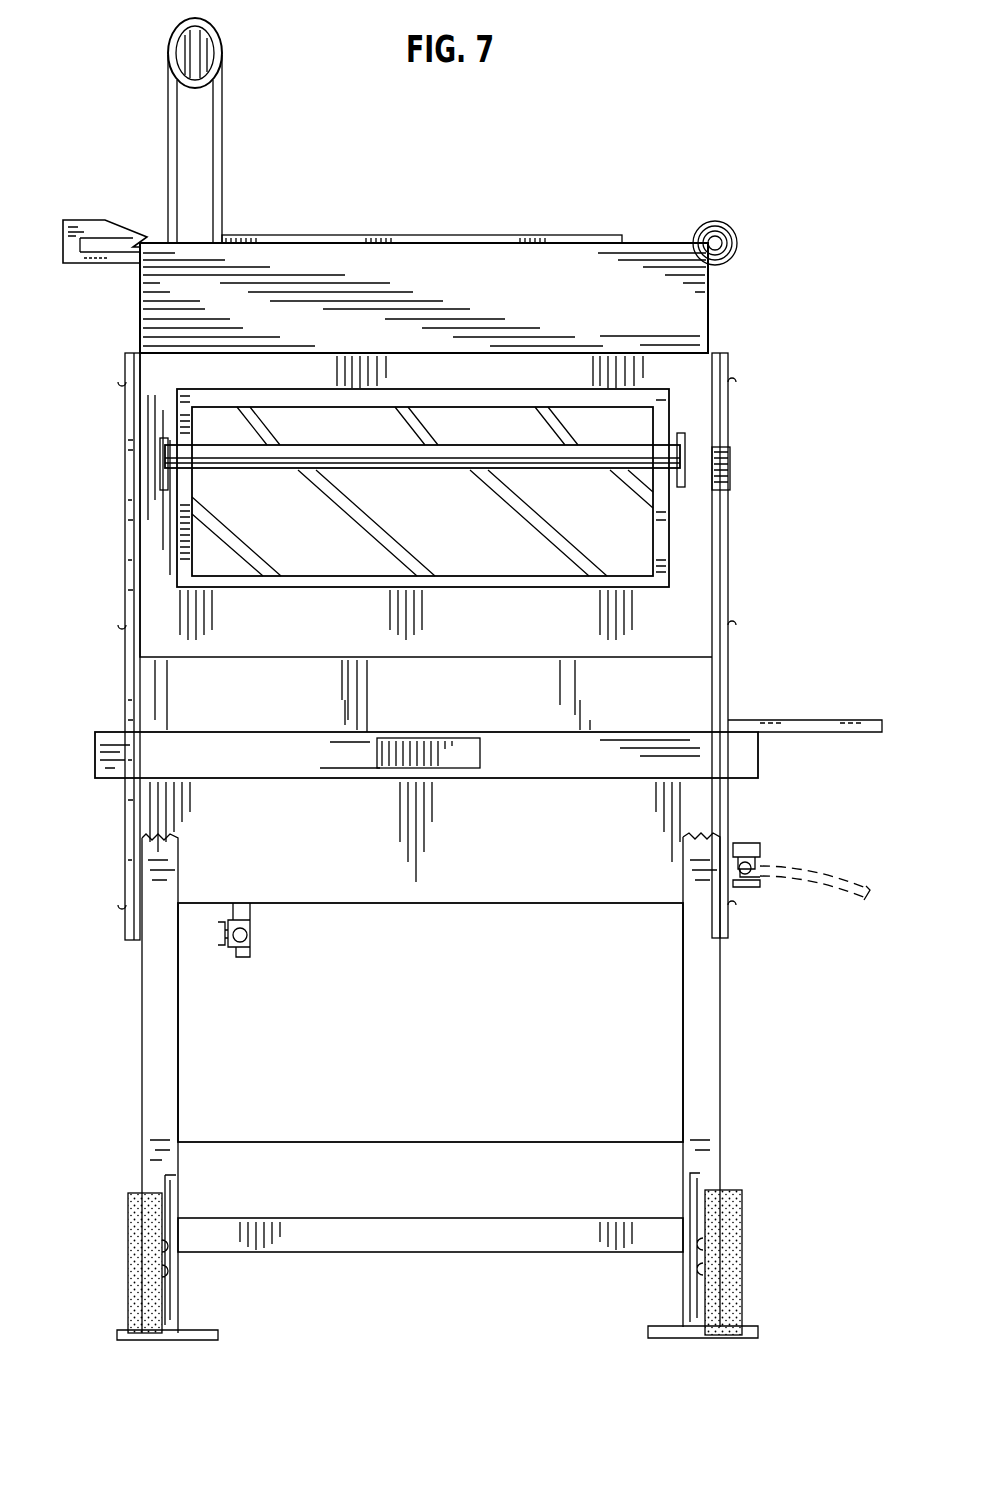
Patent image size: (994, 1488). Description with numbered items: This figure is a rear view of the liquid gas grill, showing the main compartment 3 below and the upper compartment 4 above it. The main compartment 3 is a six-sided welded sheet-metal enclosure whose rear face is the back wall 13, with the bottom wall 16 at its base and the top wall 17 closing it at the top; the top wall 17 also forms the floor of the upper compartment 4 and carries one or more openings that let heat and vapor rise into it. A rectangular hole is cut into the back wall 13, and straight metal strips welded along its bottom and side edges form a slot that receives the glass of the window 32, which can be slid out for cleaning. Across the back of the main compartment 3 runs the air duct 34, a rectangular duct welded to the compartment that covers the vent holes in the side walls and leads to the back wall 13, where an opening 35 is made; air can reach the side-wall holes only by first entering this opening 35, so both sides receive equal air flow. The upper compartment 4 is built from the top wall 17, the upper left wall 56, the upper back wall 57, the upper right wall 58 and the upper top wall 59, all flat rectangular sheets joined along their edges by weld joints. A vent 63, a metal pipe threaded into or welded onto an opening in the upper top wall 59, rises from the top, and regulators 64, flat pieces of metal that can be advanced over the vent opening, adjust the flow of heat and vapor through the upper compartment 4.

The main compartment 3 is at (108, 540).
The upper compartment 4 is at (120, 328).
The back wall 13 is at (228, 622).
The bottom wall 16 is at (312, 903).
The top wall 17 is at (192, 356).
The window 32 is at (638, 426).
The air duct 34 is at (567, 765).
The opening 35 is at (378, 760).
The upper left wall 56 is at (138, 295).
The upper back wall 57 is at (655, 333).
The upper right wall 58 is at (710, 283).
The upper top wall 59 is at (642, 242).
The vent 63 is at (214, 186).
The regulators 64 is at (96, 247).